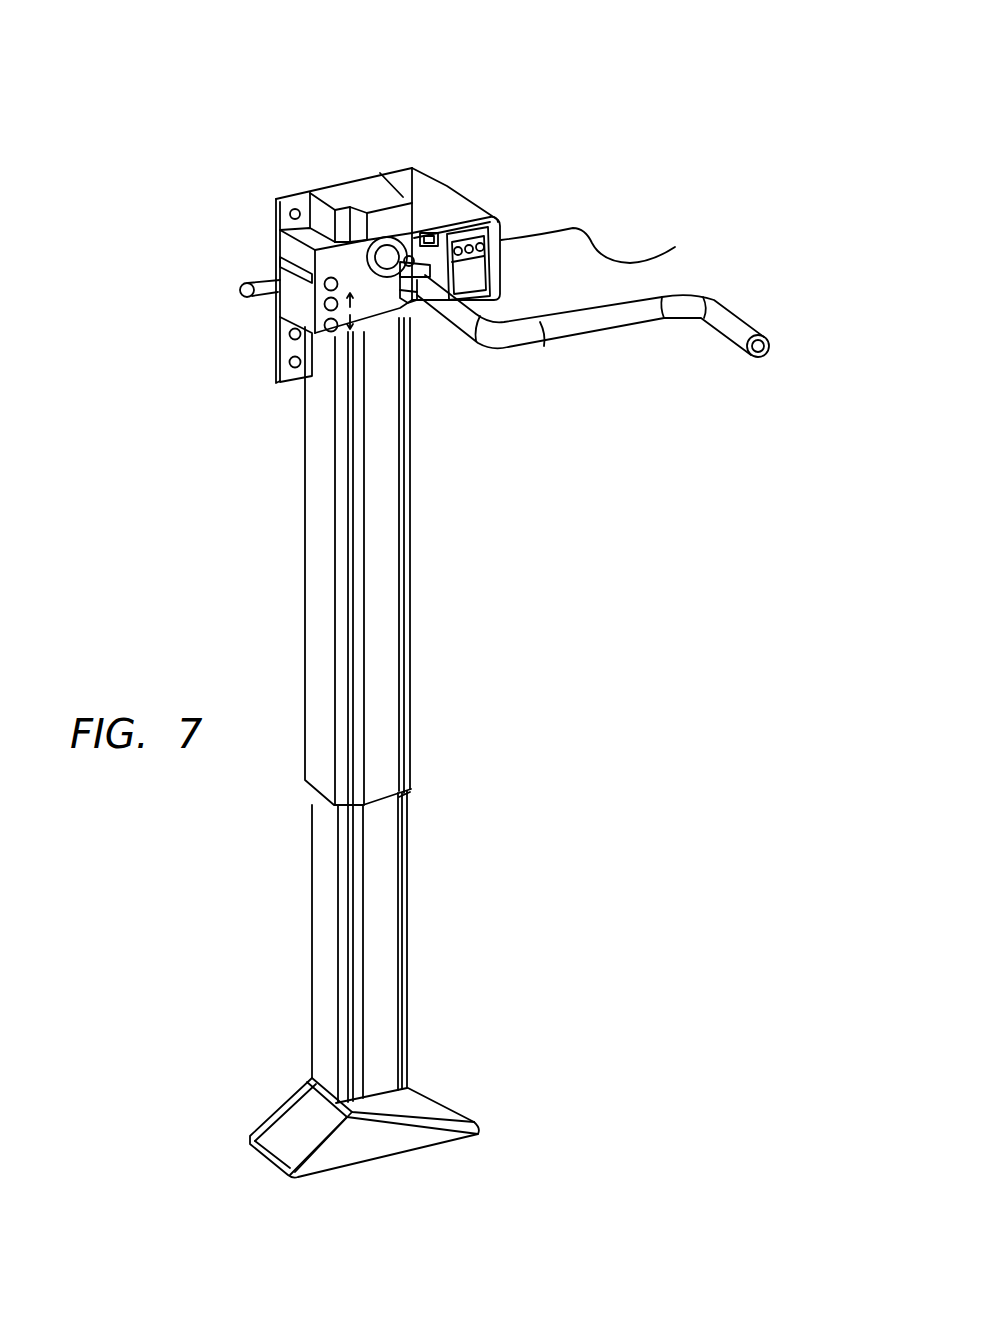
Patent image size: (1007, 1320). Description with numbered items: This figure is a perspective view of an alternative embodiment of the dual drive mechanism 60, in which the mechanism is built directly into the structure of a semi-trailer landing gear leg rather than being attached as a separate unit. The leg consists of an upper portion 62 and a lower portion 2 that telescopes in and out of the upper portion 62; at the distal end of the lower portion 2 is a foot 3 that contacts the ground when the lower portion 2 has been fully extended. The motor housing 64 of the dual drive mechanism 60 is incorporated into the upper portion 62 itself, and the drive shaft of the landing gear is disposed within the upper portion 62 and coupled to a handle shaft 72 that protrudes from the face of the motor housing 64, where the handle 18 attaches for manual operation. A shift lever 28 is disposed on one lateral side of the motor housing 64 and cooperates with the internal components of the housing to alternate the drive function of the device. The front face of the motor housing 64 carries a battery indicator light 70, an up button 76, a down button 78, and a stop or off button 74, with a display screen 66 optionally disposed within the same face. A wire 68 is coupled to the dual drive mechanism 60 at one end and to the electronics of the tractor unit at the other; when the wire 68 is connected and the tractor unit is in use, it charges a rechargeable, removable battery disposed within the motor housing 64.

The dual drive mechanism 60 is at (788, 187).
The motor housing 64 is at (438, 200).
The display screen 66 is at (477, 240).
The wire 68 is at (600, 249).
The battery indicator light 70 is at (428, 237).
The handle shaft 72 is at (398, 293).
The stop button 74 is at (325, 285).
The up button 76 is at (324, 305).
The down button 78 is at (324, 327).
The shift lever 28 is at (240, 287).
The handle 18 is at (683, 327).
The upper portion 62 is at (388, 618).
The lower portion 2 is at (390, 898).
The foot 3 is at (418, 1118).